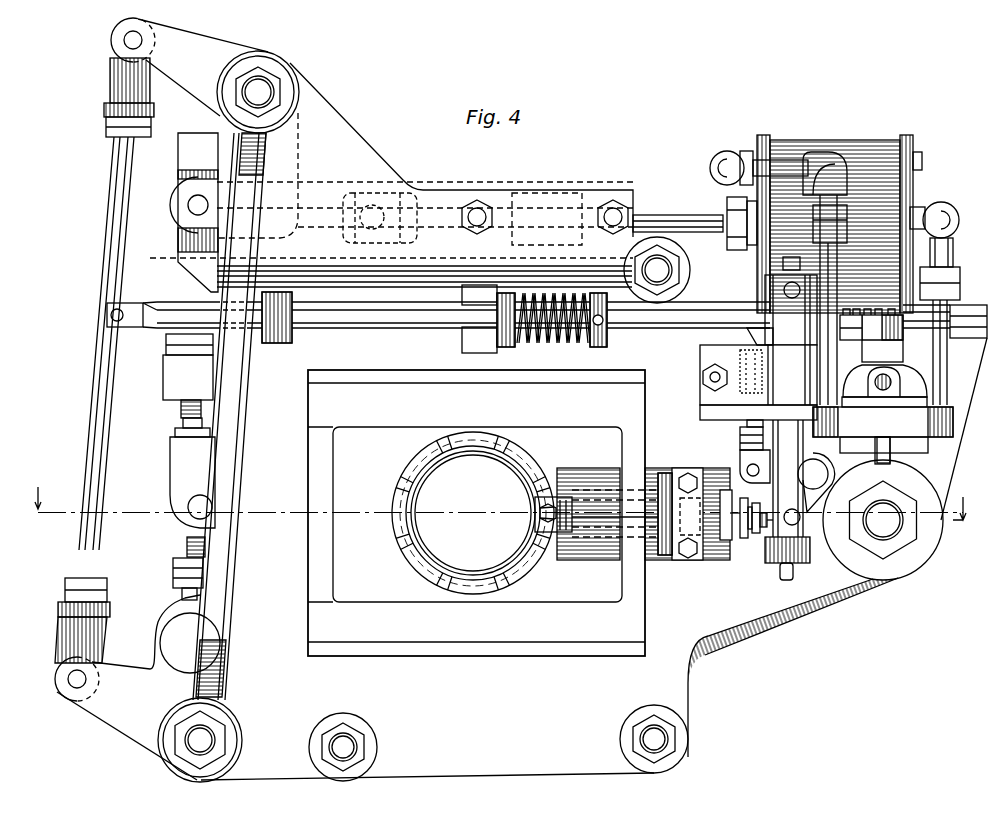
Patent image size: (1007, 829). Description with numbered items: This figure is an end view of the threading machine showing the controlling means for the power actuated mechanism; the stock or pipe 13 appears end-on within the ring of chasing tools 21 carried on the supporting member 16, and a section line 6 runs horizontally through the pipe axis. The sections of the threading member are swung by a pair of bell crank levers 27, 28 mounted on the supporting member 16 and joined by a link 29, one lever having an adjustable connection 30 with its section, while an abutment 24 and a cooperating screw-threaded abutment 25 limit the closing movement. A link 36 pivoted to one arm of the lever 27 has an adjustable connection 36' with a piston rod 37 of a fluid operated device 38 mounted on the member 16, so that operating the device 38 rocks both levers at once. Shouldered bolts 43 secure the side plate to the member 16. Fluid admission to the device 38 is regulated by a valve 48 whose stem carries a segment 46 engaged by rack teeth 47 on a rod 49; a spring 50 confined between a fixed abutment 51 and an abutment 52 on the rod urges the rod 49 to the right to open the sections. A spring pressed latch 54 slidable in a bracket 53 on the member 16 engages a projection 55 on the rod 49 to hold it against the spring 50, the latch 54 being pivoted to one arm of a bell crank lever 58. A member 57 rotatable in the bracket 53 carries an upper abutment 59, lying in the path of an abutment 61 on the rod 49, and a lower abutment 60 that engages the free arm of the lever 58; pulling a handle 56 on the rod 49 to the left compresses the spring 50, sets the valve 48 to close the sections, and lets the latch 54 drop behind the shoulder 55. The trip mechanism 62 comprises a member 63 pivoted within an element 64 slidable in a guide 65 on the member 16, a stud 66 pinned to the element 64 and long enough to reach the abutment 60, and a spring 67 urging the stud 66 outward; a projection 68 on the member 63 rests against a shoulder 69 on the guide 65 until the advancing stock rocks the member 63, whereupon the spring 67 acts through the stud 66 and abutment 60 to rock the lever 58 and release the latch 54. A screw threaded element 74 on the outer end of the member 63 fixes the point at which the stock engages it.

The section line 6- 6 is at (495, 511).
The stock or pipe 13 is at (487, 450).
The supporting member 16 is at (594, 422).
The thread cutting tools 21 is at (452, 452).
The abutment 24 is at (173, 432).
The cooperating abutment 25 is at (181, 412).
The bell crank lever 27 is at (213, 46).
The bell crank lever 28 is at (107, 712).
The link 29 is at (110, 249).
The adjustable connection 30 is at (173, 578).
The link 36 is at (178, 212).
The adjustable connection 36' is at (485, 203).
The piston rod 37 is at (662, 216).
The fluid operated device 38 is at (812, 136).
The shouldered bolts 43 is at (672, 278).
The segment 46 is at (868, 327).
The rack teeth 47 is at (845, 333).
The valve 48 is at (913, 383).
The rod 49 is at (685, 325).
The spring 50 is at (553, 346).
The fixed abutment 51 is at (463, 348).
The abutment 52 is at (605, 348).
The bracket 53 is at (758, 382).
The latch 54 is at (768, 348).
The projection 55 is at (747, 332).
The handle 56 is at (122, 312).
The member 57 is at (796, 446).
The bell crank lever 58 is at (740, 467).
The abutment 59 is at (773, 350).
The abutment 60 is at (883, 508).
The abutment 61 is at (817, 282).
The trip mechanism 62 is at (663, 562).
The member 63 is at (535, 525).
The element 64 is at (590, 492).
The guide 65 is at (603, 551).
The stud 66 is at (767, 528).
The spring 67 is at (745, 536).
The projection 68 is at (664, 488).
The shoulder 69 is at (677, 522).
The screw threaded element 74 is at (536, 509).